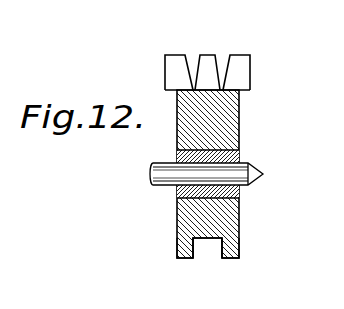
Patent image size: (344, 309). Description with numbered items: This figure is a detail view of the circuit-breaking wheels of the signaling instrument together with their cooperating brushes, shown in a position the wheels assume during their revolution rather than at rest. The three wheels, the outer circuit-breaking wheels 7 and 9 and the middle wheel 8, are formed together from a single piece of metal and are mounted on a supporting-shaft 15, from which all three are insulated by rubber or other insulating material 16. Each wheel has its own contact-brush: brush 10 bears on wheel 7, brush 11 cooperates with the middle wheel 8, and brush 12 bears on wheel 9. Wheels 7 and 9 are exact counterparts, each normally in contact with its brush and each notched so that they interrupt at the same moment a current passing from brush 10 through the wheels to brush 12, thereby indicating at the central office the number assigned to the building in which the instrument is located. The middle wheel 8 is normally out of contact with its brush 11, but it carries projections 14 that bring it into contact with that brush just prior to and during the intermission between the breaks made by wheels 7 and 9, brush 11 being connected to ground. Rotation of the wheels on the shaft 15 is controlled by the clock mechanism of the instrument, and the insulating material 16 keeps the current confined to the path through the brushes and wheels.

The circuit-breaking wheel 7 is at (184, 259).
The middle wheel 8 is at (208, 240).
The circuit-breaking wheel 9 is at (225, 259).
The contact-brush 10 is at (175, 58).
The contact-brush 11 is at (208, 58).
The contact-brush 12 is at (242, 60).
The projections 14 is at (193, 86).
The supporting-shaft 15 is at (170, 165).
The insulating material 16 is at (241, 162).